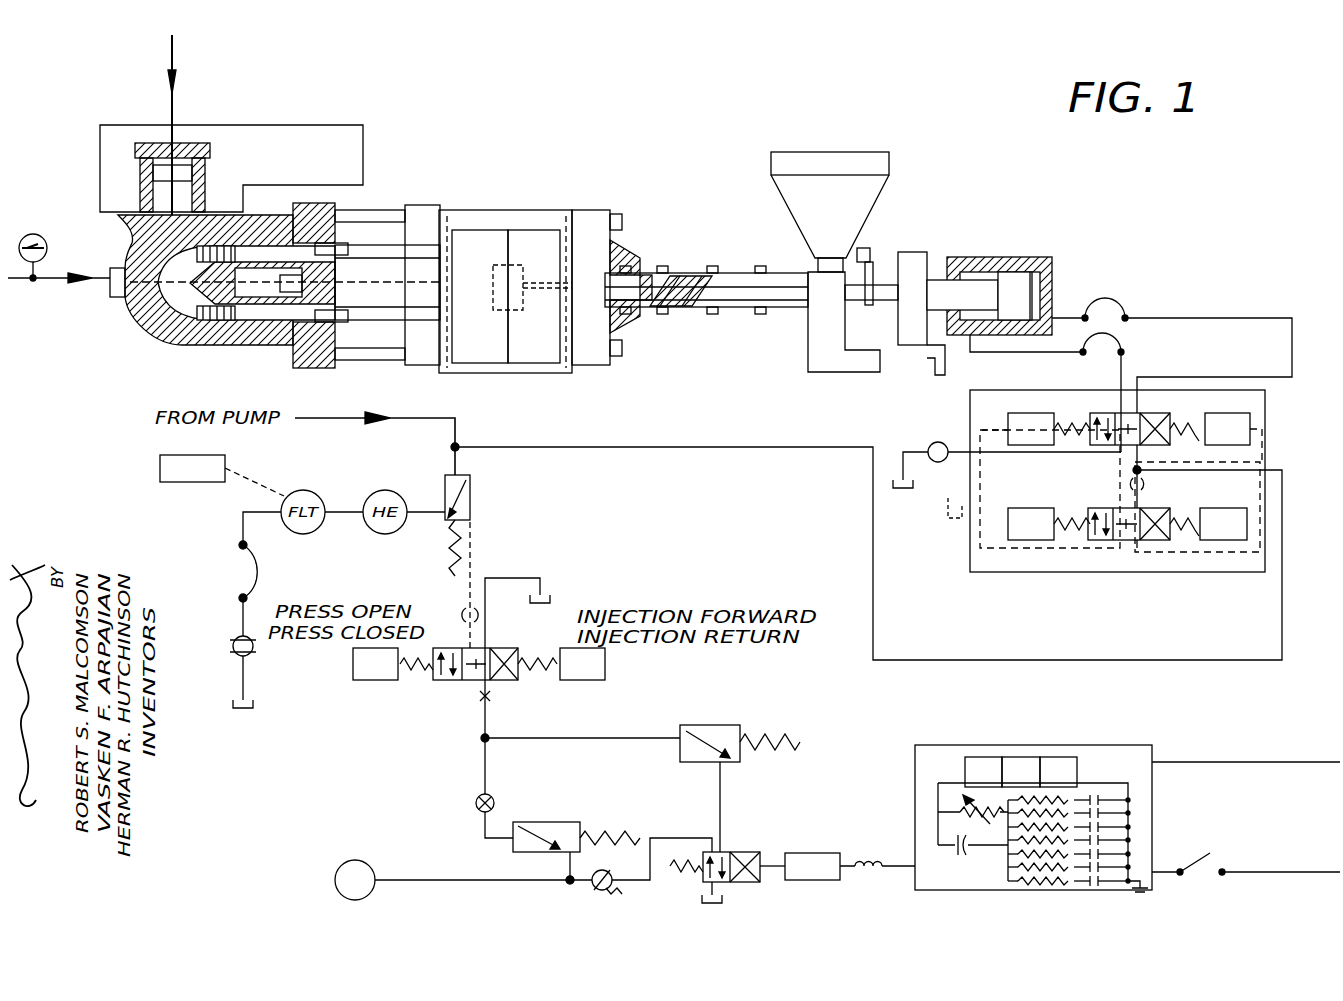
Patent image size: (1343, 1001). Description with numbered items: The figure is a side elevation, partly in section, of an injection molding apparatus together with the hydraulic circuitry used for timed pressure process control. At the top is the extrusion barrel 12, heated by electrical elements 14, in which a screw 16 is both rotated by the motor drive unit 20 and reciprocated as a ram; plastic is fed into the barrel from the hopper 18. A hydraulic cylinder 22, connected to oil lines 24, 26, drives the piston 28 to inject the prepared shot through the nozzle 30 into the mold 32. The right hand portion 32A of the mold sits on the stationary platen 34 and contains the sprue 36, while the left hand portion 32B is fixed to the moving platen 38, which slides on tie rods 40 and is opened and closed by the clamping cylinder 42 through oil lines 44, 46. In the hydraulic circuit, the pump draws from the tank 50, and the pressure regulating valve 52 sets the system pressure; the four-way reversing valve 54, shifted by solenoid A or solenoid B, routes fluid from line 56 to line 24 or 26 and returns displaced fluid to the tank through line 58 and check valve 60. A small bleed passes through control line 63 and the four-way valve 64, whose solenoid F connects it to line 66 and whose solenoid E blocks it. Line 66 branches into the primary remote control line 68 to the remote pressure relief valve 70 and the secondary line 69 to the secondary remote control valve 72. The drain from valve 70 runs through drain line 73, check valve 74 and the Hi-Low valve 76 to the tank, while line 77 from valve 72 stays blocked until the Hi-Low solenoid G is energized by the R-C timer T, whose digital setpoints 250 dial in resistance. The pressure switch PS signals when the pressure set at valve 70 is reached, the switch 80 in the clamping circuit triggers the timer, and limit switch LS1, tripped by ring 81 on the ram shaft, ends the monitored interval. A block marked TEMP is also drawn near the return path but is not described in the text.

The barrel 12 is at (786, 307).
The electrical elements 14 is at (758, 266).
The screw 16 is at (688, 306).
The hopper 18 is at (830, 262).
The motor drive unit 20 is at (918, 252).
The hydraulic cylinder 22 is at (1030, 236).
The oil line 24 is at (1058, 318).
The oil line 26 is at (1058, 353).
The piston 28 is at (1015, 296).
The nozzle 30 is at (595, 290).
The mold 32 is at (505, 311).
The right hand portion of the mold 32A is at (518, 367).
The left hand portion of the mold 32B is at (475, 365).
The stationary platen 34 is at (592, 212).
The sprue 36 is at (540, 296).
The moving platen 38 is at (423, 208).
The tie rods 40 is at (380, 210).
The clamping cylinder 42 is at (178, 344).
The oil line 44 is at (182, 96).
The oil line 46 is at (54, 282).
The tank 50 is at (245, 708).
The pressure regulating valve 52 is at (472, 490).
The four-way hydraulic reversing valve 54 is at (1139, 492).
The line 56 is at (656, 446).
The line 58 is at (975, 446).
The check valve 60 is at (930, 448).
The control line 63 is at (472, 546).
The four-way valve 64 is at (477, 663).
The line 66 is at (488, 720).
The primary remote control line 68 is at (488, 775).
The secondary pressure remote control line 69 is at (622, 736).
The remote pressure relief valve 70 is at (562, 820).
The secondary injection pressure remote control valve 72 is at (728, 722).
The drain line 73 is at (566, 868).
The check valve 74 is at (598, 876).
The Hi-Low valve 76 is at (765, 829).
The line 77 is at (724, 790).
The switch 80 is at (50, 216).
The ring 81 is at (869, 305).
The digital setpoints 250 is at (972, 757).
The limit switch LS1 is at (915, 236).
The R-C electronic timer T is at (1127, 800).
The solenoid A is at (1046, 544).
The solenoid B is at (1236, 544).
The solenoid E is at (384, 686).
The solenoid F is at (566, 682).
The Hi-Low solenoid G is at (826, 832).
The pressure actuated switch PS is at (463, 880).
The temperature controller TEMP is at (222, 475).